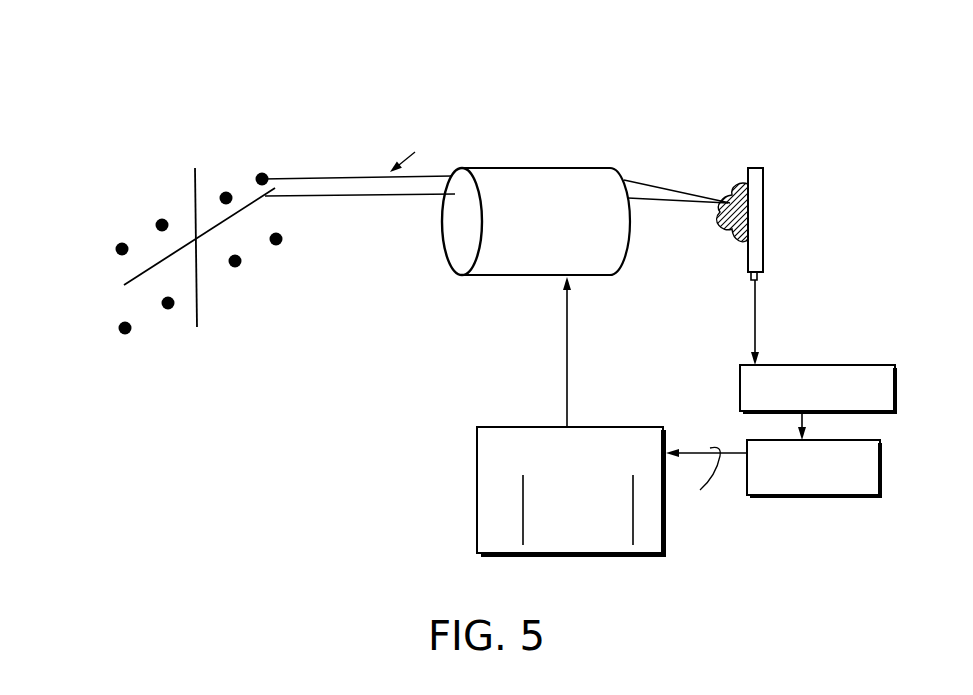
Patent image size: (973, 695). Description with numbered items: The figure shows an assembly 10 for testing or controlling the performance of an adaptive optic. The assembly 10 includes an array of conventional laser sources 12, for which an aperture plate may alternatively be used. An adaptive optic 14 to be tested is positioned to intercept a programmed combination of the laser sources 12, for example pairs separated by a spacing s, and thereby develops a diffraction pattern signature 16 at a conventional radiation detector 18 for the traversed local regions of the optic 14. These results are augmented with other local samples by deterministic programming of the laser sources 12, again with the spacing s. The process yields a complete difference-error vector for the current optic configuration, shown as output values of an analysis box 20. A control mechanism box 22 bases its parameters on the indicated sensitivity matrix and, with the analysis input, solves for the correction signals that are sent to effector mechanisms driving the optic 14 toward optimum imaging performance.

The assembly 10 is at (753, 92).
The array of laser sources 12 is at (86, 278).
The adaptive optic 14 is at (516, 168).
The diffraction pattern signature 16 is at (710, 242).
The radiation detector 18 is at (778, 251).
The analysis box 20 is at (885, 472).
The control mechanism box 22 is at (477, 472).
The spacing between laser sources S is at (352, 207).